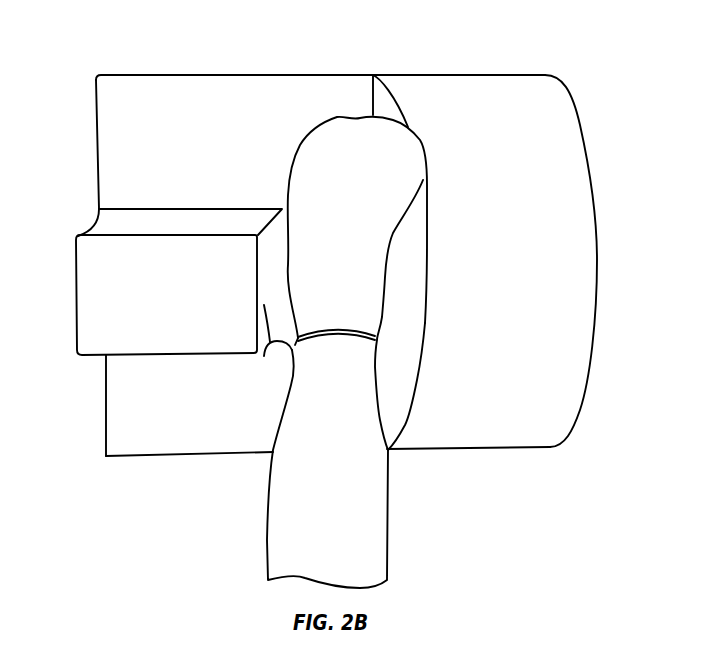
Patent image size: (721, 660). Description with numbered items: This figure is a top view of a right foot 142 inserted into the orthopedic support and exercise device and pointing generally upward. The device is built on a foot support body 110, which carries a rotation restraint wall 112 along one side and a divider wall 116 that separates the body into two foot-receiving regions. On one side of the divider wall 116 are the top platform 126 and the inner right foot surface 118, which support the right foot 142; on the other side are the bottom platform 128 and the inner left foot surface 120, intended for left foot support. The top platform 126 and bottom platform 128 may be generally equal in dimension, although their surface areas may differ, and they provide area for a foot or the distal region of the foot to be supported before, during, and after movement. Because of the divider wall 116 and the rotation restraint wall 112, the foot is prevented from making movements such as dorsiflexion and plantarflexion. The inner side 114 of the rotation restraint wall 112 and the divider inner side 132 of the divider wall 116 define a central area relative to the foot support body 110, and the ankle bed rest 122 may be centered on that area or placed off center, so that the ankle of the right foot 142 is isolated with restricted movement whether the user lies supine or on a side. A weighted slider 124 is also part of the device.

The foot support body 110 is at (343, 82).
The rotation restraint wall 112 is at (552, 115).
The inner side of rotation restraint wall 114 is at (402, 295).
The divider wall 116 is at (112, 311).
The inner right foot surface 118 is at (133, 223).
The inner left foot surface 120 is at (155, 357).
The ankle bed rest 122 is at (408, 258).
The weighted slider 124 is at (530, 447).
The top platform 126 is at (178, 102).
The bottom platform 128 is at (155, 432).
The divider inner side 132 is at (262, 357).
The right foot 142 is at (325, 157).